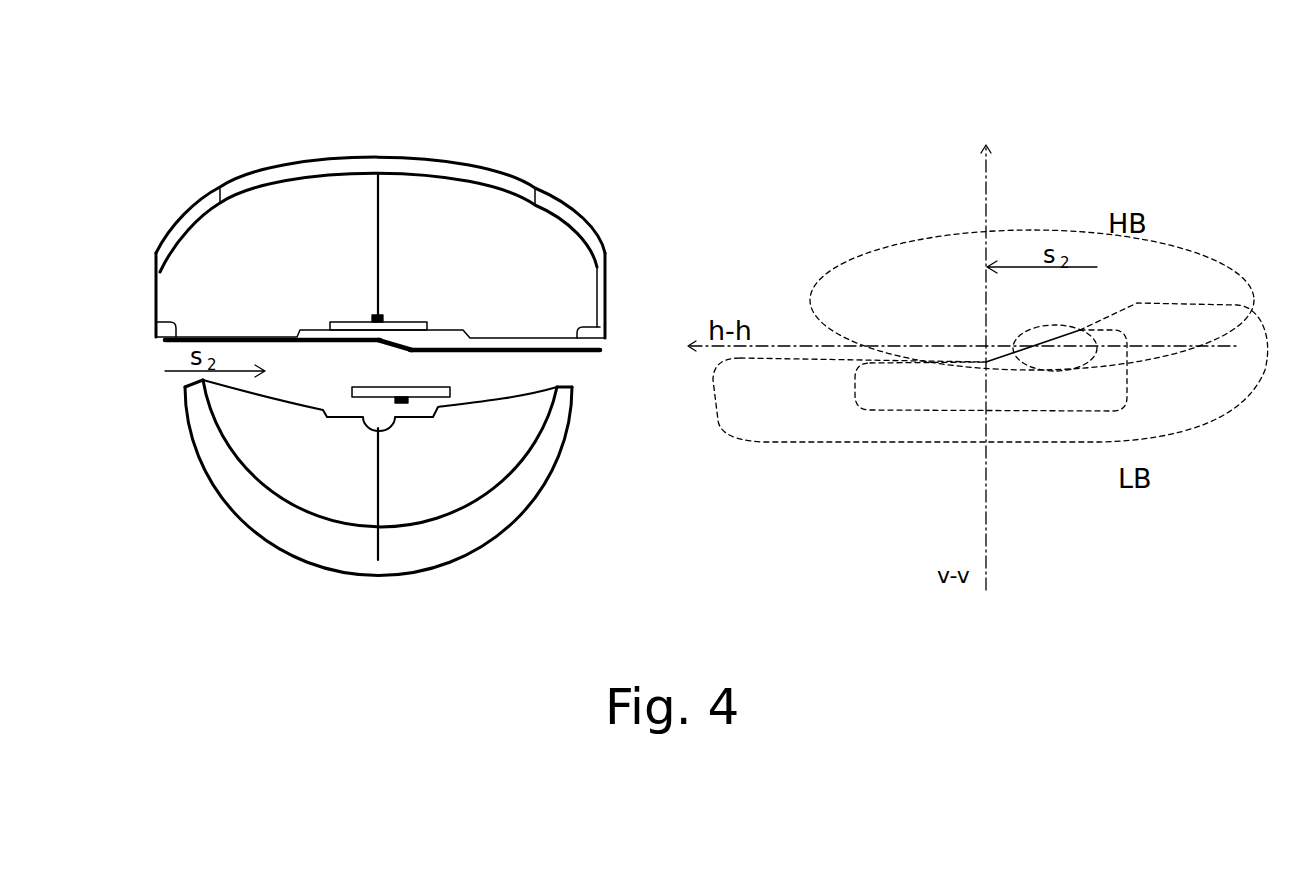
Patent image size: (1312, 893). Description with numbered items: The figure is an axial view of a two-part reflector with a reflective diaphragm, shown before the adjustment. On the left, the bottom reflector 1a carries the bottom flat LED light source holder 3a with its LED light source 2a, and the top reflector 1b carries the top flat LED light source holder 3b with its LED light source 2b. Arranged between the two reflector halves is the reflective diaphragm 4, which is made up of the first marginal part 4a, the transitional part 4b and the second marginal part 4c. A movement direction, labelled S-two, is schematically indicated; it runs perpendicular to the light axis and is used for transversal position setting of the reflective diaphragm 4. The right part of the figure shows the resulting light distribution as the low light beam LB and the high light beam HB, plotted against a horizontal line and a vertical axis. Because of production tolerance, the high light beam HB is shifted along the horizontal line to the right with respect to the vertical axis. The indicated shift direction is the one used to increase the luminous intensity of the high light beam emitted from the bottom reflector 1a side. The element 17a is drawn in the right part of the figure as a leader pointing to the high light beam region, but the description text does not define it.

The bottom reflector 1a is at (415, 503).
The top reflector 1b is at (485, 247).
The LED light source 2a is at (400, 403).
The LED light source 2b is at (367, 318).
The bottom flat LED light source holder 3a is at (370, 392).
The top flat LED light source holder 3b is at (398, 330).
The reflective diaphragm 4 is at (406, 256).
The first marginal part 4a is at (199, 338).
The transitional part 4b is at (407, 347).
The second marginal part 4c is at (553, 367).
The upper body region 17a is at (1160, 270).